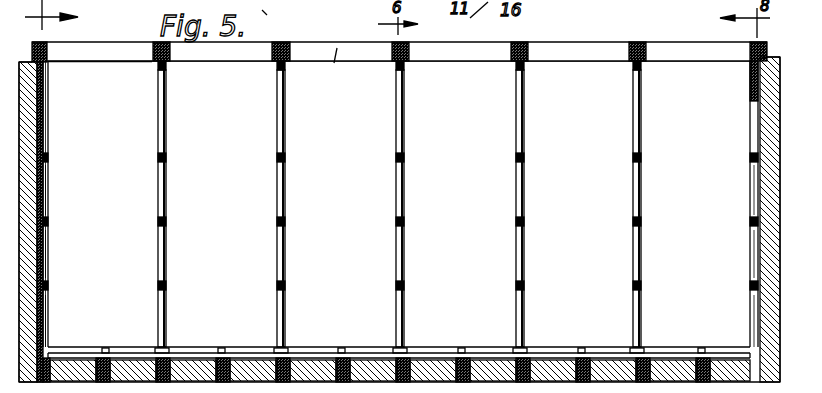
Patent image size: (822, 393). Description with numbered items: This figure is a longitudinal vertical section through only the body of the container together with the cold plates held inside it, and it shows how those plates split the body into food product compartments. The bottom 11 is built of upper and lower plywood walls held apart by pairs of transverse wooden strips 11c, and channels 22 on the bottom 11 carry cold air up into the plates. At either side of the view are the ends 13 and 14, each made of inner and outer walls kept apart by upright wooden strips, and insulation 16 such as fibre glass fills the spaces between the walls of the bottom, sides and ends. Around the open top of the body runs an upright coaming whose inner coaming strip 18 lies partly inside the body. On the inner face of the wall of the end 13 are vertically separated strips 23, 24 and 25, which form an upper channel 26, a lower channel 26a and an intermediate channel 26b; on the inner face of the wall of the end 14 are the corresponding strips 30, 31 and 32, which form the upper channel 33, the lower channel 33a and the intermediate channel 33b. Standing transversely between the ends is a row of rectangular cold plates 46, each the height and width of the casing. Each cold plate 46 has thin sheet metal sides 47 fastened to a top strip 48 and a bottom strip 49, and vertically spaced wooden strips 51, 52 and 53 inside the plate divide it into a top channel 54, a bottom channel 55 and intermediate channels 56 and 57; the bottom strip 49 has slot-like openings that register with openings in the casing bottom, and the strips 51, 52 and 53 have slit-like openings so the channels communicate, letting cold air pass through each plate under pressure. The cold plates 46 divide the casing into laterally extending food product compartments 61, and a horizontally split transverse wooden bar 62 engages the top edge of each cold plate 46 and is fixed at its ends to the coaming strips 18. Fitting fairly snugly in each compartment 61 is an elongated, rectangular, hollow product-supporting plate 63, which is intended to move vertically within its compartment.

The bottom 11 is at (418, 362).
The transverse wooden strips 11c is at (447, 334).
The end 13 is at (26, 62).
The end 14 is at (781, 57).
The insulation 16 is at (43, 97).
The inner coaming strip 18 is at (399, 68).
The channels 22 is at (660, 358).
The strip 23 is at (47, 157).
The strip 24 is at (47, 220).
The strip 25 is at (47, 286).
The upper channel 26 is at (43, 133).
The lower channel 26a is at (45, 307).
The intermediate channel 26b is at (45, 186).
The strip 30 is at (750, 155).
The strip 31 is at (750, 218).
The strip 32 is at (750, 280).
The upper channel 33 is at (750, 100).
The lower channel 33a is at (750, 308).
The intermediate channel 33b is at (750, 247).
The cold plate 46 is at (278, 117).
The sheet metal sides 47 is at (276, 186).
The top strip 48 is at (279, 64).
The bottom strip 49 is at (285, 347).
The strip 51 is at (286, 283).
The strip 52 is at (286, 220).
The strip 53 is at (286, 157).
The top channel 54 is at (405, 122).
The bottom channel 55 is at (405, 306).
The intermediate channel 56 is at (405, 187).
The intermediate channel 57 is at (405, 250).
The compartment 61 is at (111, 74).
The transverse wooden bar 62 is at (514, 54).
The product-supporting plate 63 is at (194, 347).